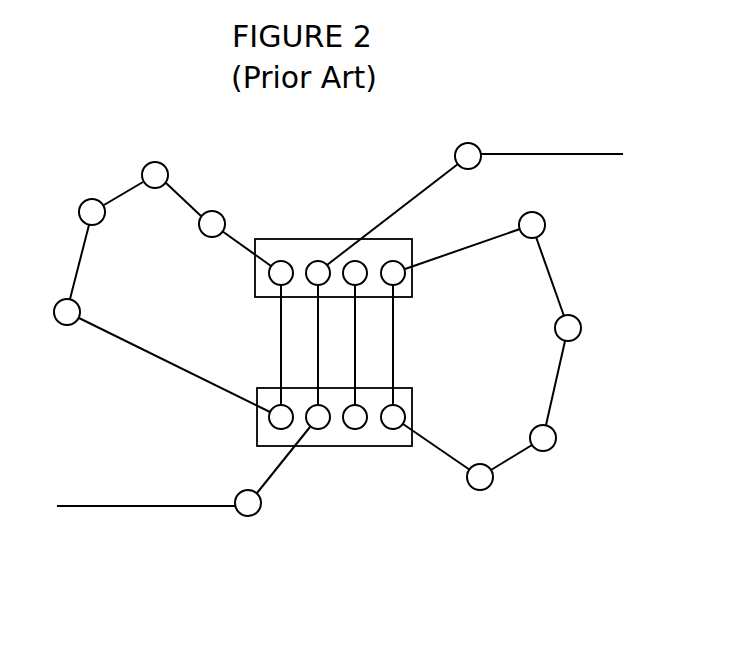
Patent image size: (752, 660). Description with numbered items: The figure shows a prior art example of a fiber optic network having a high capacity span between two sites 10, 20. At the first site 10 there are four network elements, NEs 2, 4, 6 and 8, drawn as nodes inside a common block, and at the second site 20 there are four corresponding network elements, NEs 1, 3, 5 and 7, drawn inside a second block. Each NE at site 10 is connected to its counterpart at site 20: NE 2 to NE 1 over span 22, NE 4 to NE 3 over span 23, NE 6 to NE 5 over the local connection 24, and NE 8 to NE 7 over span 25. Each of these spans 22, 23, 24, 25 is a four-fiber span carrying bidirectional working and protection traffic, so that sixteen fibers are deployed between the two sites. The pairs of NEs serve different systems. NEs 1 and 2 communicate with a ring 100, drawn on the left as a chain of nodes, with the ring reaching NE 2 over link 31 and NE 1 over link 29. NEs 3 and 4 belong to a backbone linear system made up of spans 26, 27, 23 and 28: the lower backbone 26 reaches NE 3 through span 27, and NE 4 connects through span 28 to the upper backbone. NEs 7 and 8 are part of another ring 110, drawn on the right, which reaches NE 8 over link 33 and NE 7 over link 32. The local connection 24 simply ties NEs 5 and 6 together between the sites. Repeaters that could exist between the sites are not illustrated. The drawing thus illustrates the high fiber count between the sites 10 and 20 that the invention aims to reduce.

The network element 1 is at (268, 426).
The network element 2 is at (270, 278).
The network element 3 is at (310, 407).
The network element 4 is at (313, 262).
The network element 5 is at (363, 425).
The network element 6 is at (352, 290).
The network element 7 is at (399, 409).
The network element 8 is at (400, 287).
The site 10 is at (296, 240).
The site 20 is at (342, 447).
The span 22 is at (277, 393).
The span 23 is at (318, 357).
The local connection 24 is at (360, 368).
The span 25 is at (396, 368).
The span 26 is at (183, 507).
The span 27 is at (290, 455).
The span 28 is at (403, 202).
The link from network 100 to node 1 29 is at (148, 358).
The link from network 100 to node 2 31 is at (244, 246).
The link from node 7 to network 110 32 is at (432, 448).
The link from node 8 to network 110 33 is at (488, 240).
The ring 100 is at (166, 283).
The ring 110 is at (526, 333).